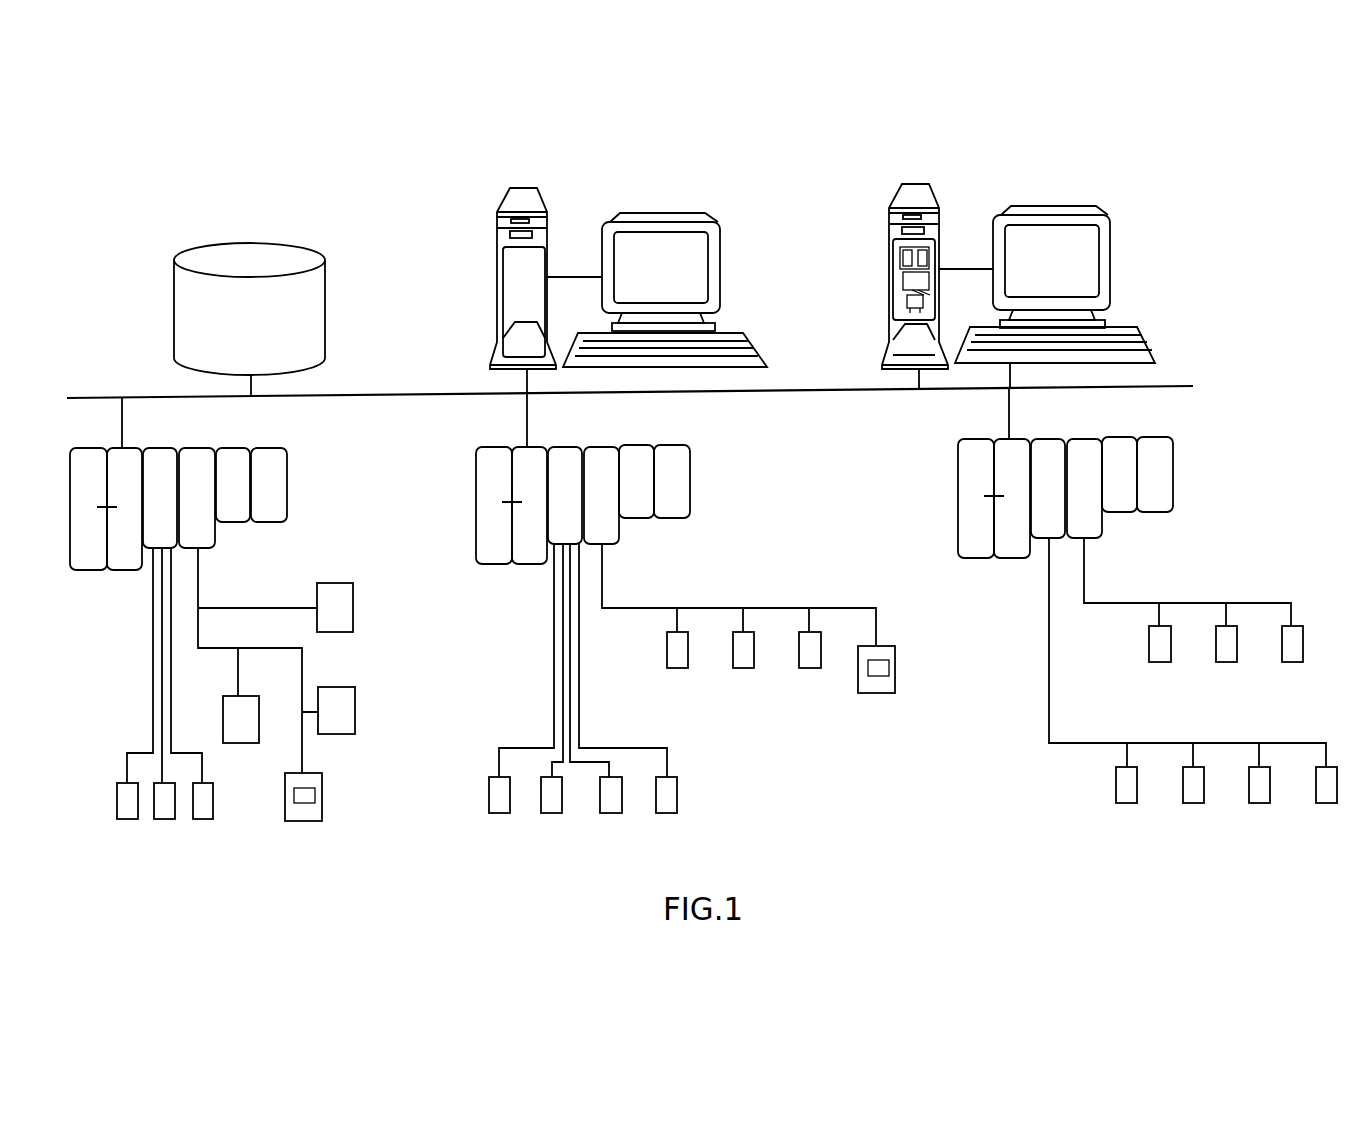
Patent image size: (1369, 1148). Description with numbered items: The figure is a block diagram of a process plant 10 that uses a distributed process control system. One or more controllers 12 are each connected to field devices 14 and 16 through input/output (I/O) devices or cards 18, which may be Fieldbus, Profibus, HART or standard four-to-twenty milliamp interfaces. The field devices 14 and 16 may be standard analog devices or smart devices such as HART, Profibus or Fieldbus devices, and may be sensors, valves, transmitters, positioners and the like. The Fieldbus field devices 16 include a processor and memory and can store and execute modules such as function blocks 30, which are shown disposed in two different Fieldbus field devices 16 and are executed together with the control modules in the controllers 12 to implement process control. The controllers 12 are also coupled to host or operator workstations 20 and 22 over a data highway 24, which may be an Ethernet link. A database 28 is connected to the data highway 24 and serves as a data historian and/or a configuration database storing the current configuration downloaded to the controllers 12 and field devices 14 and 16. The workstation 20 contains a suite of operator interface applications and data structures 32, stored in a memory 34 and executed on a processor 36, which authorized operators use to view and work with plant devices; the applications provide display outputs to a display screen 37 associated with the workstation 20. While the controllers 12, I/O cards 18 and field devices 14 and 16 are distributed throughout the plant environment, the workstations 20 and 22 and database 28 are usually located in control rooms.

The process plant 10 is at (150, 119).
The controller 12 is at (118, 462).
The field device 14 is at (130, 819).
The Fieldbus field device 16 is at (776, 700).
The input/output card 18 is at (162, 465).
The operator workstation 20 is at (1005, 262).
The operator workstation 22 is at (521, 190).
The data highway 24 is at (367, 394).
The database 28 is at (327, 292).
The function block 30 is at (315, 795).
The suite of operator interface applications 32 is at (900, 257).
The memory 34 is at (903, 283).
The processor 36 is at (907, 303).
The display screen 37 is at (1112, 250).